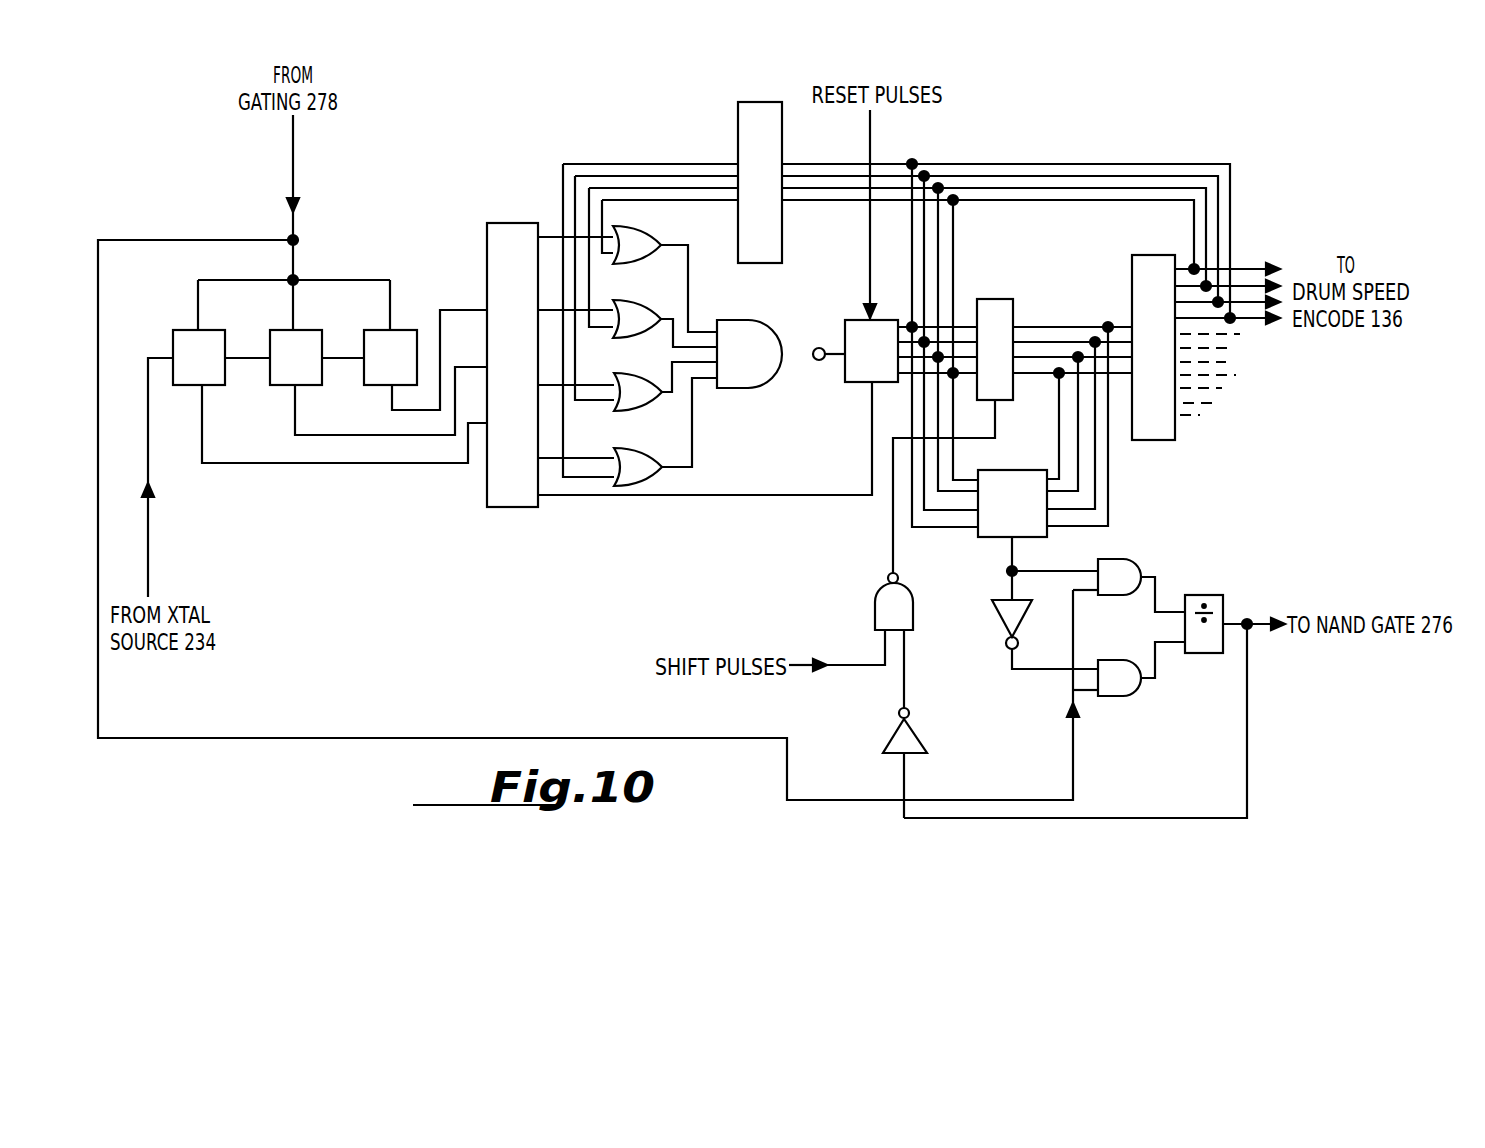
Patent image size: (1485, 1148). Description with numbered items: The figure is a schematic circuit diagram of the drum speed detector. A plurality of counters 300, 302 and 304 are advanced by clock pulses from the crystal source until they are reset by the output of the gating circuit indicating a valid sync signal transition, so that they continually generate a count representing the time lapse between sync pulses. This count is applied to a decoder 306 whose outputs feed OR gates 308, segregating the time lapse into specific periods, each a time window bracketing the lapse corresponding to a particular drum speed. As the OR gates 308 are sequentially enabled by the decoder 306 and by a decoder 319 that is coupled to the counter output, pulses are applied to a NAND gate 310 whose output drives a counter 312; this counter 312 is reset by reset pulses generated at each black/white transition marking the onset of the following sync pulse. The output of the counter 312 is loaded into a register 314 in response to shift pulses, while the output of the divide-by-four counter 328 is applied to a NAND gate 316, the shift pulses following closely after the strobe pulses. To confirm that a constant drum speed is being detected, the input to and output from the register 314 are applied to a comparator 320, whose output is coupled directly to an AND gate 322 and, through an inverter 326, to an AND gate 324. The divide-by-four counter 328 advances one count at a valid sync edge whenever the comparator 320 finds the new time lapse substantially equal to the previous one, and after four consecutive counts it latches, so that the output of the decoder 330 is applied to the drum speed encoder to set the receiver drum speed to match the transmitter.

The counter 300 is at (183, 330).
The counter 302 is at (284, 330).
The counter 304 is at (379, 330).
The decoder 306 is at (487, 494).
The OR gates 308 is at (637, 311).
The NAND gate 310 is at (753, 367).
The counter 312 is at (858, 374).
The register 314 is at (988, 303).
The NAND gate 316 is at (887, 598).
The decoder 319 is at (742, 133).
The comparator 320 is at (1008, 480).
The AND gate 322 is at (1118, 570).
The AND gate 324 is at (1127, 688).
The inverter 326 is at (1005, 612).
The divide-by-four counter 328 is at (1212, 595).
The decoder 330 is at (1132, 290).